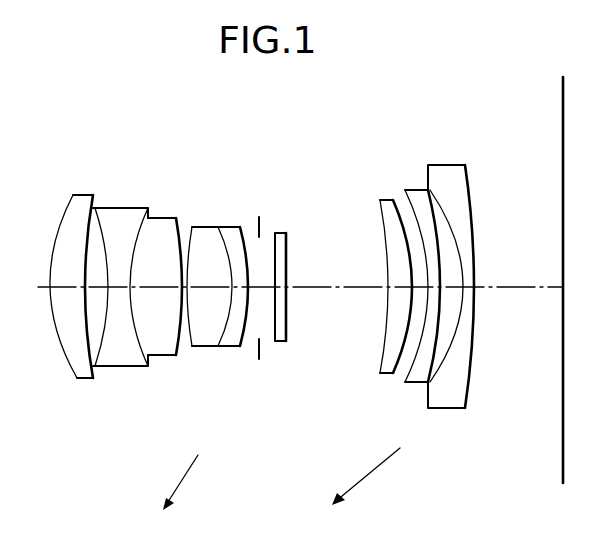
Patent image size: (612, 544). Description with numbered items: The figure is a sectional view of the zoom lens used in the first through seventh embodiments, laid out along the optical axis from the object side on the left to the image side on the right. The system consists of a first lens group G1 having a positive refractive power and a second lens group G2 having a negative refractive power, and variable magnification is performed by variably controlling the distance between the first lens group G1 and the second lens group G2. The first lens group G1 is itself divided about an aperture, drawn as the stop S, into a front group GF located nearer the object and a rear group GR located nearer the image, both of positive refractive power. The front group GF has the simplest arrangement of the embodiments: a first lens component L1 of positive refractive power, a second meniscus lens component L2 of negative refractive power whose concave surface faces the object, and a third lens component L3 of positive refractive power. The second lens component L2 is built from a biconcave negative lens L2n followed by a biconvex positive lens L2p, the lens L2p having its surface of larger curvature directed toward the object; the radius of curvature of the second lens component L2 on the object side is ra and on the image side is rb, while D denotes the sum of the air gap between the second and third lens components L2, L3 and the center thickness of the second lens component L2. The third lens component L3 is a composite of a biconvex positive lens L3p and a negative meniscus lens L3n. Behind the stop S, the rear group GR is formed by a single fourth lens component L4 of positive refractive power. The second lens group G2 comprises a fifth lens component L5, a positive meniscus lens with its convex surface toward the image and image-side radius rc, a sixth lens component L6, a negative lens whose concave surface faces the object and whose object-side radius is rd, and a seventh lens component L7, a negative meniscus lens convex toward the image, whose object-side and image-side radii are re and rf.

The first lens group G1 is at (312, 110).
The front group GF is at (243, 162).
The rear group GR is at (305, 162).
The second lens group G2 is at (472, 108).
The first lens component L1 is at (82, 380).
The second meniscus lens component L2 is at (192, 420).
The biconcave negative lens L2n is at (120, 366).
The biconvex positive lens L2p is at (168, 355).
The third lens component L3 is at (265, 420).
The biconvex positive lens L3p is at (213, 345).
The negative meniscus lens L3n is at (236, 347).
The fourth lens component L4 is at (283, 341).
The fifth lens component L5 is at (386, 374).
The sixth lens component L6 is at (413, 383).
The seventh lens component L7 is at (452, 409).
The aperture stop S is at (259, 225).
The sum of air gap and center thickness D is at (181, 286).
The object-side radius of curvature of second lens component ra is at (102, 234).
The image-side radius of curvature of second lens component rb is at (175, 236).
The image-side radius of curvature of fifth lens component rc is at (394, 207).
The object-side radius of curvature of sixth lens component rd is at (410, 211).
The object-side radius of curvature of seventh lens component re is at (450, 220).
The image-side radius of curvature of seventh lens component rf is at (473, 230).